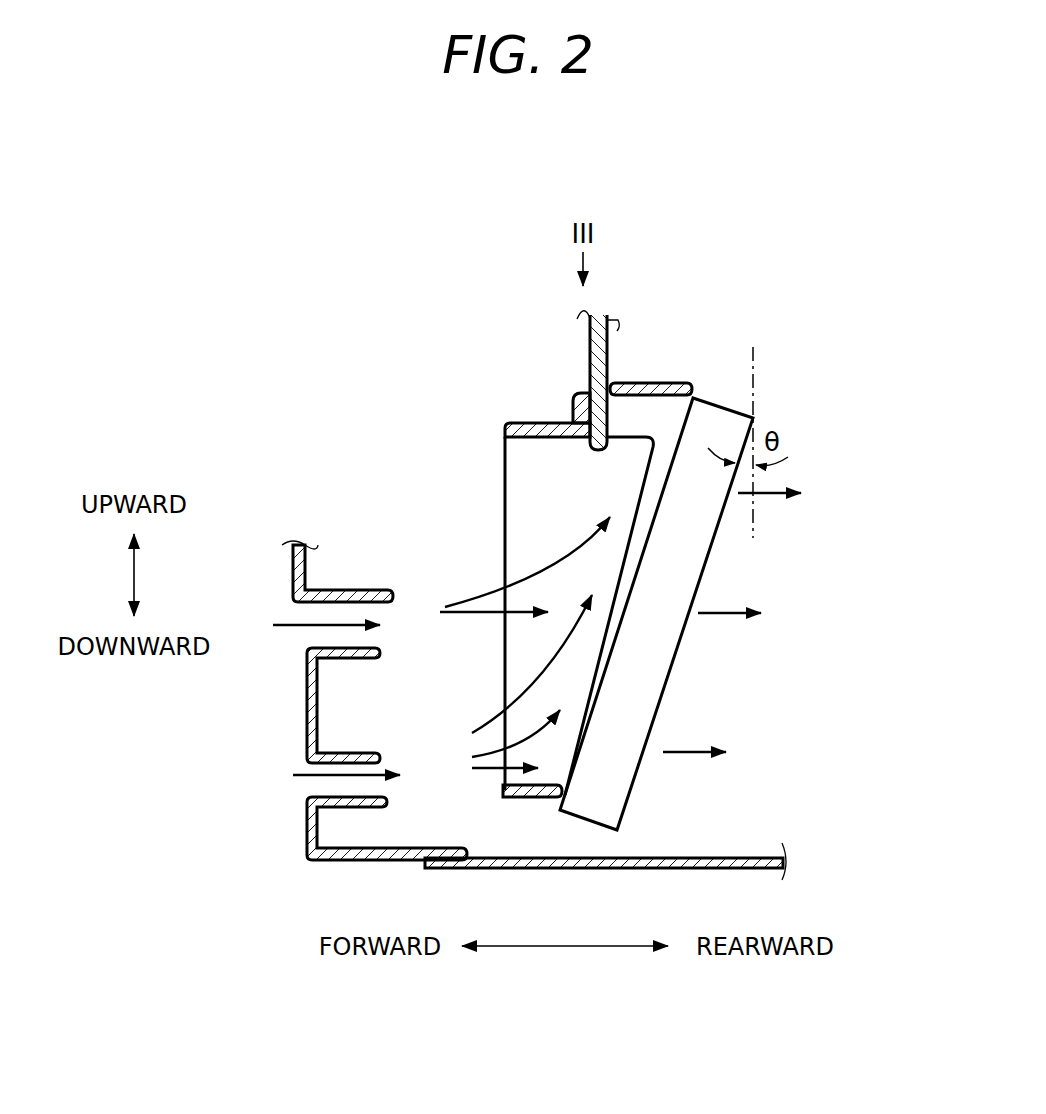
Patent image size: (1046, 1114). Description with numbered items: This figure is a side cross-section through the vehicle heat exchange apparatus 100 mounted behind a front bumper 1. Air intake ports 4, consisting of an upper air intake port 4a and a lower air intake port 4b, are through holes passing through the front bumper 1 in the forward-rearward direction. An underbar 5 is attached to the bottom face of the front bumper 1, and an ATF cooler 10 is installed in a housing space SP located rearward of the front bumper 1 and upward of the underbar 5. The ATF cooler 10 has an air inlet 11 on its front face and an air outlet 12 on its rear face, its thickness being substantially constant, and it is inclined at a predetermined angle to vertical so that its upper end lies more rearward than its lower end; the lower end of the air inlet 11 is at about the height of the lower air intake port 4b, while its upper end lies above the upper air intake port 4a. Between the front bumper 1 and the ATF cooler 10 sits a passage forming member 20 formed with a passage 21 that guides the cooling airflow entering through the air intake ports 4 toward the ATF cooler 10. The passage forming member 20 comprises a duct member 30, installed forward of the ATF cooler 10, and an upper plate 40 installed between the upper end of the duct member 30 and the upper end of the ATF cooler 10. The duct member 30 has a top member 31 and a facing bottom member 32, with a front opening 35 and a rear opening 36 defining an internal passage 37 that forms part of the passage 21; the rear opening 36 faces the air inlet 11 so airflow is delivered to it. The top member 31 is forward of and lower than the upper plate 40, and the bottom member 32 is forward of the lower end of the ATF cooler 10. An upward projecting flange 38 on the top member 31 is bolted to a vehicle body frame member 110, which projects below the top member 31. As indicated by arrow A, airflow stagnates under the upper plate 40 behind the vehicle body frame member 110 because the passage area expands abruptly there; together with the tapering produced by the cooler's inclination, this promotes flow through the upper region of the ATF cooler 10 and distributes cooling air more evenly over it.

The vehicle heat exchange apparatus 100 is at (806, 370).
The front bumper 1 is at (288, 566).
The air intake ports 4 is at (318, 749).
The upper air intake port 4a is at (312, 638).
The lower air intake port 4b is at (310, 792).
The underbar 5 is at (763, 865).
The housing space SP is at (692, 830).
The ATF cooler 10 is at (675, 575).
The air inlet 11 is at (680, 433).
The air outlet 12 is at (715, 543).
The passage forming member 20 is at (500, 588).
The passage 21 is at (526, 520).
The duct member 30 is at (497, 588).
The top member 31 is at (532, 421).
The bottom member 32 is at (528, 798).
The front opening 35 is at (503, 668).
The rear opening 36 is at (596, 668).
The passage 37 is at (523, 552).
The flange 38 is at (577, 398).
The upper plate 40 is at (675, 382).
The vehicle body frame member 110 is at (590, 335).
The arrow A is at (626, 411).